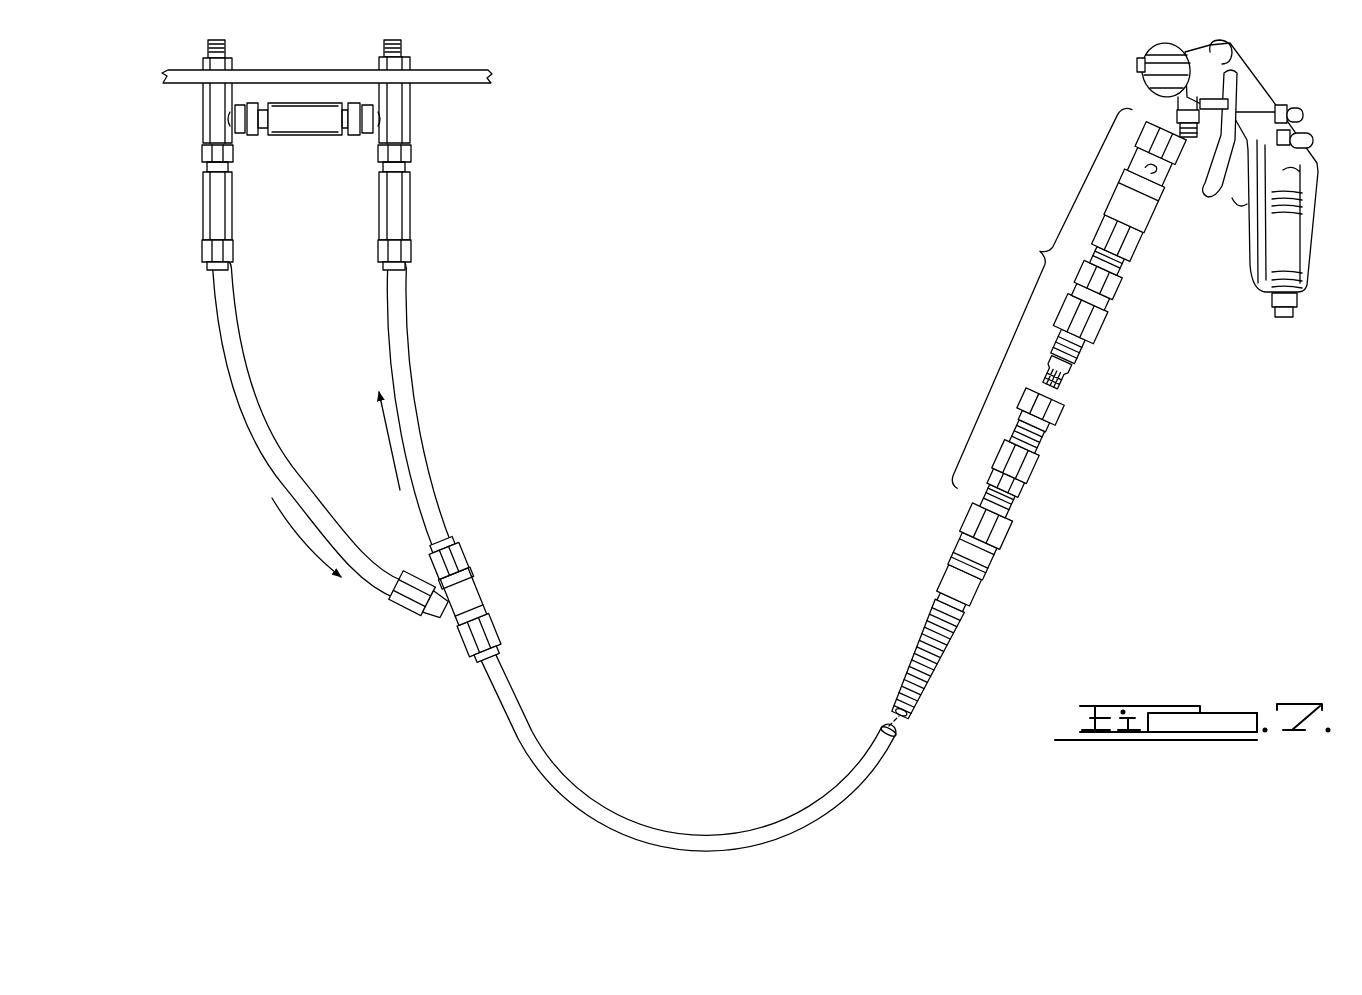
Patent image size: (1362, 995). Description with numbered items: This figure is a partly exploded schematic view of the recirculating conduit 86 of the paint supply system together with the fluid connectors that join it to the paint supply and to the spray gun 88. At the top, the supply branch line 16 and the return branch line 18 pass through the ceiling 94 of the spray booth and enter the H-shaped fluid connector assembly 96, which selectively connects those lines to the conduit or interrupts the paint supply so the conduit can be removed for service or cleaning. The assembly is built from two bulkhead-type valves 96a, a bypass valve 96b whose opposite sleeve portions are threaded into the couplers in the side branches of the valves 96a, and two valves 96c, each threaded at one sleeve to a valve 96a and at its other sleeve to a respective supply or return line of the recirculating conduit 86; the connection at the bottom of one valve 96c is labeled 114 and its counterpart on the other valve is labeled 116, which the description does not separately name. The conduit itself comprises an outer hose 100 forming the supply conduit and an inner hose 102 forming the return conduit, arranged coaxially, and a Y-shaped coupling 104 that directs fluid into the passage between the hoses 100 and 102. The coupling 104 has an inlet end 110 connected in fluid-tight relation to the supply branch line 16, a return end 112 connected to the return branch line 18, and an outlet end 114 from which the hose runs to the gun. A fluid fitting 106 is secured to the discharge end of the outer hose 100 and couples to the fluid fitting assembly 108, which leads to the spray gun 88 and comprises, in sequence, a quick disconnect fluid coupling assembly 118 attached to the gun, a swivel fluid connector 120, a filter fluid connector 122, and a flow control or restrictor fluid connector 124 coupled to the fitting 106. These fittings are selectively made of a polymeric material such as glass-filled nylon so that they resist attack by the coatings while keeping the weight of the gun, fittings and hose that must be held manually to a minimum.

The supply branch line 16 is at (384, 53).
The return branch line 18 is at (208, 54).
The recirculating conduit 86 is at (806, 757).
The spray gun 88 is at (1246, 265).
The ceiling 94 is at (488, 82).
The H-shaped fluid connector assembly 96 is at (339, 148).
The bulkhead valve 96a is at (203, 123).
The bypass valve 96b is at (290, 136).
The valve 96c is at (203, 213).
The outer hose 100 is at (377, 580).
The inner hose 102 is at (447, 530).
The Y-shaped coupling 104 is at (502, 611).
The fluid fitting 106 is at (971, 559).
The fluid fitting assembly 108 is at (1025, 411).
The inlet end 110 is at (443, 613).
The return end 112 is at (473, 580).
The outlet end 114 is at (233, 255).
The nut 116 is at (411, 253).
The quick disconnect fluid coupling assembly 118 is at (1134, 200).
The swivel fluid connector 120 is at (1076, 327).
The filter fluid connector 122 is at (1033, 422).
The restrictor fluid connector 124 is at (1007, 480).